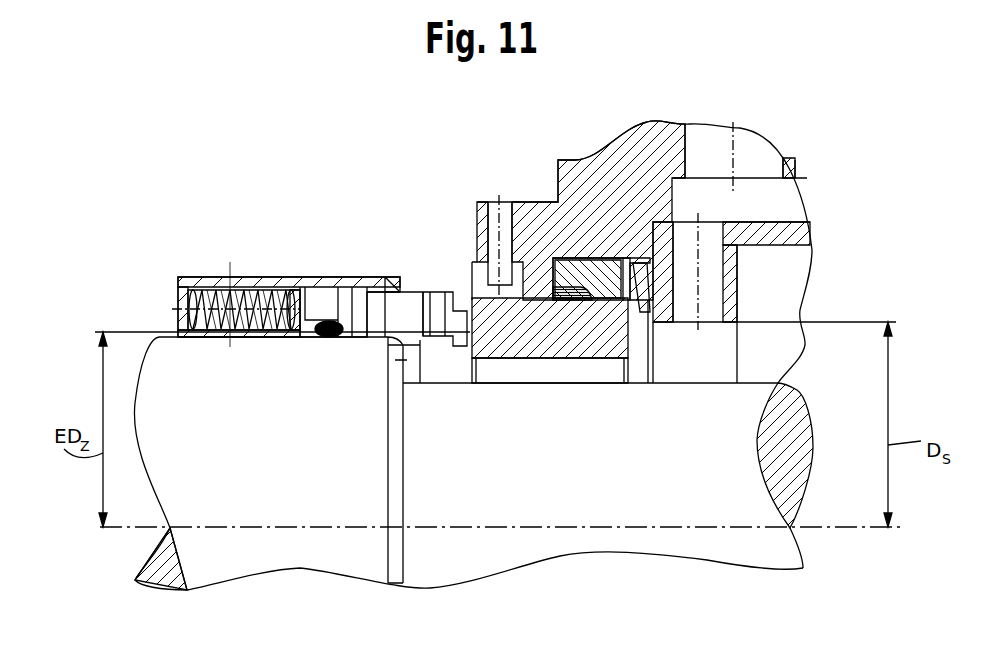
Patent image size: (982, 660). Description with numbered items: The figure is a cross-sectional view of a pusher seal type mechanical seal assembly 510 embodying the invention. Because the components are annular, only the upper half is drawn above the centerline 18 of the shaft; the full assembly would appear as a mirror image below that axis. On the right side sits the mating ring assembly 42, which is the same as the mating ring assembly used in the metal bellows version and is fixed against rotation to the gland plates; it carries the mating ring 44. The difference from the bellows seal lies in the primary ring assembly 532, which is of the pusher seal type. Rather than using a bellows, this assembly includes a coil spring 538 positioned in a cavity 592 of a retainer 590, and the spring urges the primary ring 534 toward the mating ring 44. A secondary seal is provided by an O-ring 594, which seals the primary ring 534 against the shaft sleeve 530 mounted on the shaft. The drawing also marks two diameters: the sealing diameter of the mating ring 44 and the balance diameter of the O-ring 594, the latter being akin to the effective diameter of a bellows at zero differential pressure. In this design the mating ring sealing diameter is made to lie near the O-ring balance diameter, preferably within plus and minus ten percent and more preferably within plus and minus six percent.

The centerline 18 is at (750, 530).
The mating ring assembly 42 is at (597, 367).
The mating ring 44 is at (513, 352).
The mechanical seal assembly 510 is at (675, 103).
The shaft sleeve 530 is at (393, 360).
The primary ring assembly 532 is at (373, 278).
The primary ring 534 is at (437, 290).
The coil spring 538 is at (237, 335).
The retainer 590 is at (250, 277).
The cavity 592 is at (215, 335).
The O-ring 594 is at (323, 337).